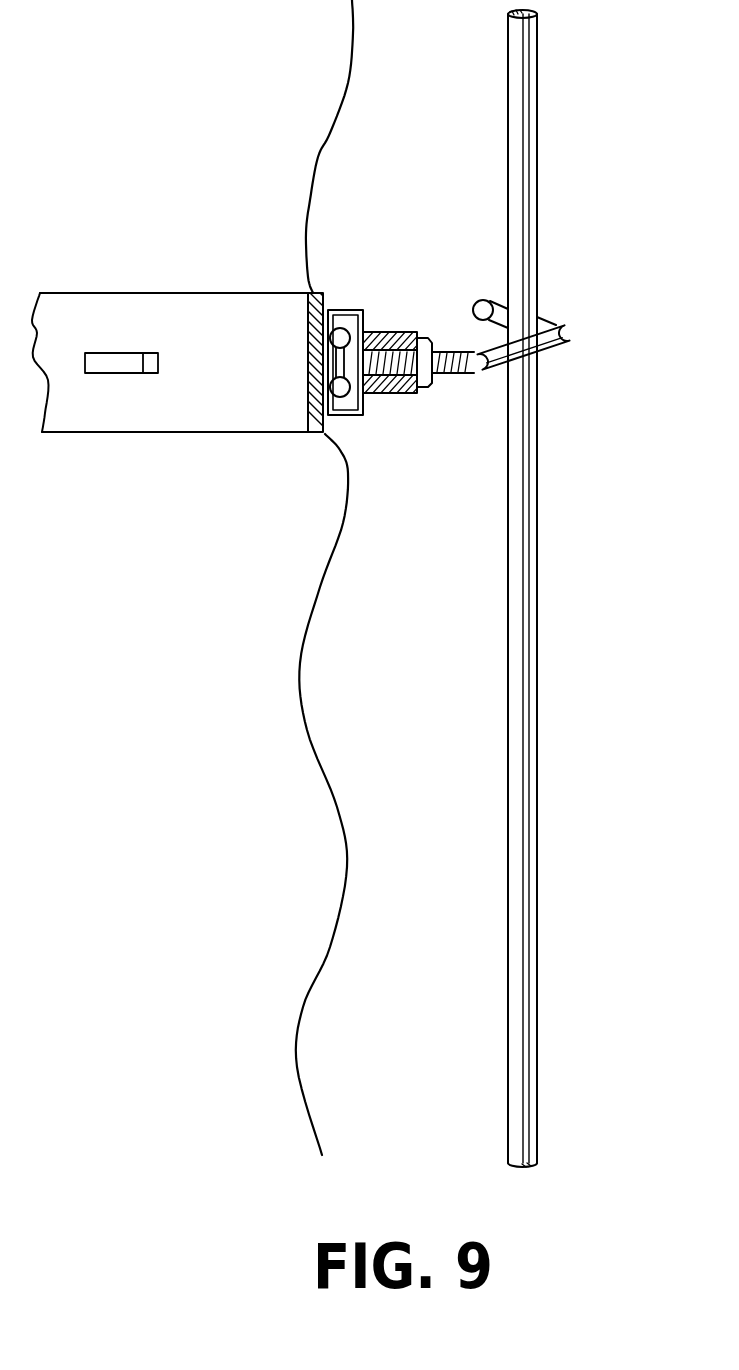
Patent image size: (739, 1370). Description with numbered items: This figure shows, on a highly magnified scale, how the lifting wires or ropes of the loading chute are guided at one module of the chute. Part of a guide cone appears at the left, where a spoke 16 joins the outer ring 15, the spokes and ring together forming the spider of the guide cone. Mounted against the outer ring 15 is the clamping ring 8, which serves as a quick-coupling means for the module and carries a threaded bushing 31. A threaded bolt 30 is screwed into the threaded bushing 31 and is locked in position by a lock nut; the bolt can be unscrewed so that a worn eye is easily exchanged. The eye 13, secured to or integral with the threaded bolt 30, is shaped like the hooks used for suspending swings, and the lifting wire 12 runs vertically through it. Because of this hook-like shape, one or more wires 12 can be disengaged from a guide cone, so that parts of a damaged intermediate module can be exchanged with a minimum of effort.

The clamping ring 8 is at (340, 313).
The lifting wires 12 is at (512, 515).
The eyes 13 is at (560, 345).
The outer ring 15 is at (318, 428).
The spokes 16 is at (217, 420).
The threaded bolt 30 is at (452, 374).
The threaded bushing 31 is at (391, 389).